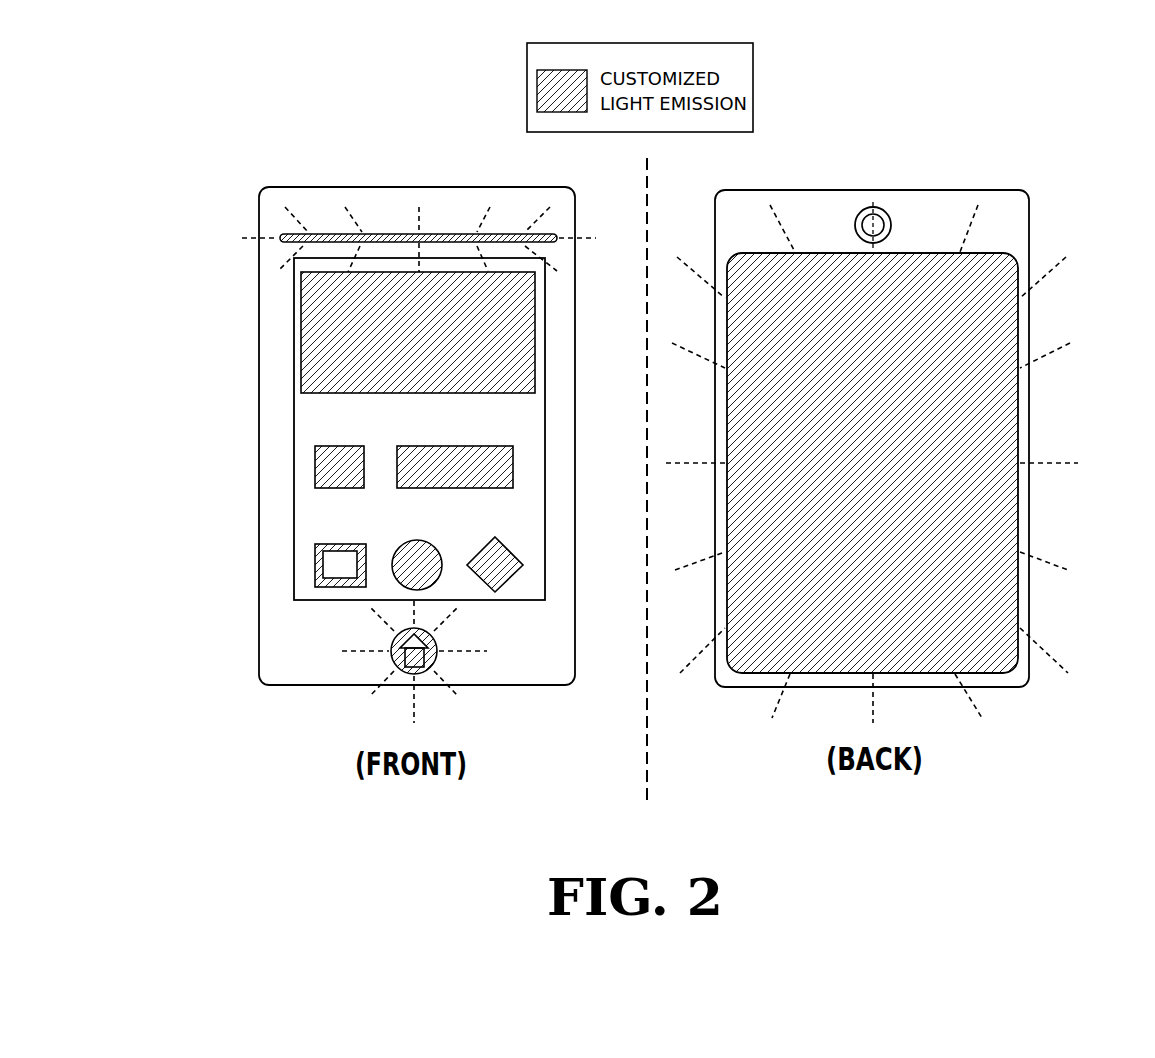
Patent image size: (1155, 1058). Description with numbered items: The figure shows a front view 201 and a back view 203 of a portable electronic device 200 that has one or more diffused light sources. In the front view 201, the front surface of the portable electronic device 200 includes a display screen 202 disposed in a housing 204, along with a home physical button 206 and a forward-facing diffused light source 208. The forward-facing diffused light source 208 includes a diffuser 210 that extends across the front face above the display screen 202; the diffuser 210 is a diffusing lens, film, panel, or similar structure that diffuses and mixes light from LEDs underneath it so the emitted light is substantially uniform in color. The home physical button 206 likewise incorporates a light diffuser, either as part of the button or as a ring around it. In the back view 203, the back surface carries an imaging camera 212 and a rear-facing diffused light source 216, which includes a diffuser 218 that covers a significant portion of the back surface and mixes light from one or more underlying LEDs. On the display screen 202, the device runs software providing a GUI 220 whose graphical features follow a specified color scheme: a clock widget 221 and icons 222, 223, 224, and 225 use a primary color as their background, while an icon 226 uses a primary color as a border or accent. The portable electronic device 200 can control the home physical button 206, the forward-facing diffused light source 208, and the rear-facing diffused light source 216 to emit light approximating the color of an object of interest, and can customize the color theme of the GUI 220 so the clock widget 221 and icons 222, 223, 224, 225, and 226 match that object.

The portable electronic device 200 is at (291, 718).
The front view 201 is at (437, 149).
The display screen 202 is at (556, 518).
The back view 203 is at (885, 149).
The housing 204 is at (259, 633).
The home physical button 206 is at (397, 636).
The forward-facing diffused light source 208 is at (511, 226).
The diffuser 210 is at (385, 232).
The imaging camera 212 is at (855, 225).
The rear-facing diffused light source 216 is at (1030, 322).
The diffuser 218 is at (1018, 420).
The GUI 220 is at (525, 426).
The clock widget 221 is at (301, 333).
The icon 222 is at (315, 467).
The icon 223 is at (513, 467).
The icon 224 is at (405, 543).
The icon 225 is at (484, 548).
The icon 226 is at (315, 565).